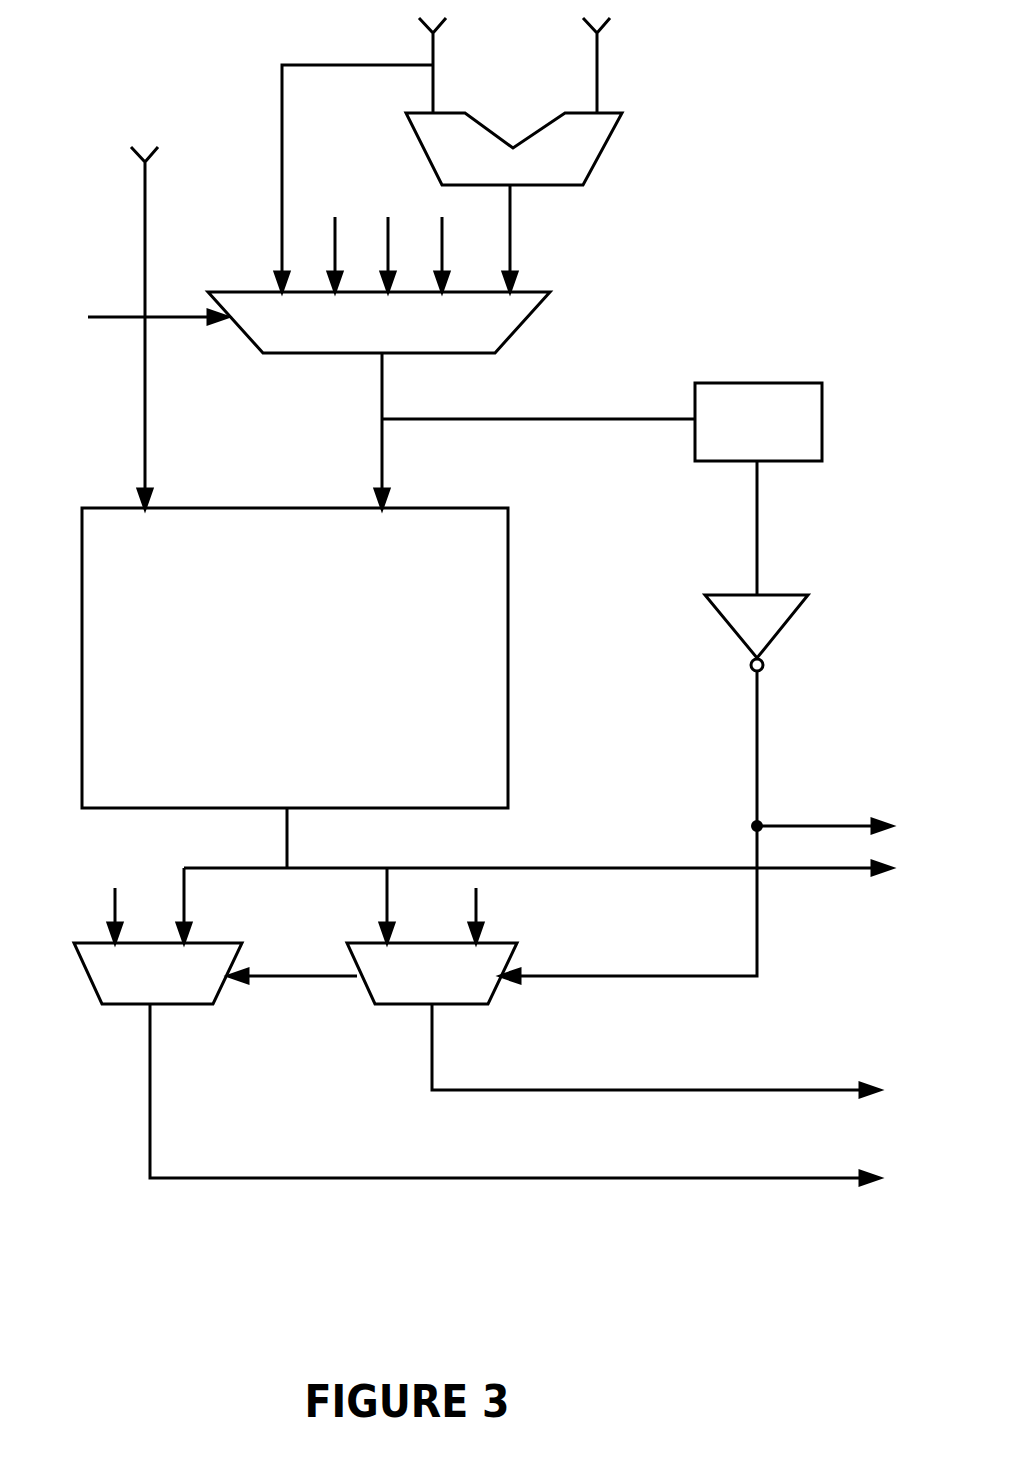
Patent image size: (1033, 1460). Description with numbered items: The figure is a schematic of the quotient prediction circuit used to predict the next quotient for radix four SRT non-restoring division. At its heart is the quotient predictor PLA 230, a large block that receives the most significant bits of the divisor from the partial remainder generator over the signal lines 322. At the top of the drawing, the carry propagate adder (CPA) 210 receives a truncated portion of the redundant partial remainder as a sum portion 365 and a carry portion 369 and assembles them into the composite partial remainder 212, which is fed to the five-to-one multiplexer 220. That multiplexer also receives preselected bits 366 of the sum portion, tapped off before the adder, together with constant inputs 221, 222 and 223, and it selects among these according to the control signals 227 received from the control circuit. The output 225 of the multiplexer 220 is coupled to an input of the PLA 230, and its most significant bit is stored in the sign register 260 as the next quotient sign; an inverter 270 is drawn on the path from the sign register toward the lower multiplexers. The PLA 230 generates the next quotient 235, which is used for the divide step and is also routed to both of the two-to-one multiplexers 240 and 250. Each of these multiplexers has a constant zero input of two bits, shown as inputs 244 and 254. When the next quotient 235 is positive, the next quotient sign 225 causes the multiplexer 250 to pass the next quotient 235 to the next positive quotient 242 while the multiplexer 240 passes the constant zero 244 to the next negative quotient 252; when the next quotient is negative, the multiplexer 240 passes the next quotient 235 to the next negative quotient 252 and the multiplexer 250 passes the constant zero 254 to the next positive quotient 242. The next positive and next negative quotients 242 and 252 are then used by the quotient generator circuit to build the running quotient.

The carry propagate adder 210 is at (604, 172).
The composite partial remainder 212 is at (515, 243).
The multiplexer 220 is at (520, 338).
The constant input 221 is at (342, 268).
The constant input 222 is at (398, 243).
The constant input 223 is at (448, 268).
The output of multiplexer / next quotient sign 225 is at (388, 388).
The control signals 227 is at (160, 305).
The quotient predictor PLA 230 is at (515, 635).
The next quotient 235 is at (832, 865).
The multiplexer 240 is at (220, 993).
The next positive quotient 242 is at (688, 1077).
The constant zero input 244 is at (120, 900).
The multiplexer 250 is at (495, 998).
The next negative quotient 252 is at (743, 1168).
The constant zero input 254 is at (483, 910).
The sign register 260 is at (828, 432).
The inverter 270 is at (793, 627).
The signal lines 322 is at (150, 198).
The sum portion 365 is at (440, 80).
The preselected bits of sum portion 366 is at (358, 55).
The carry portion 369 is at (615, 80).